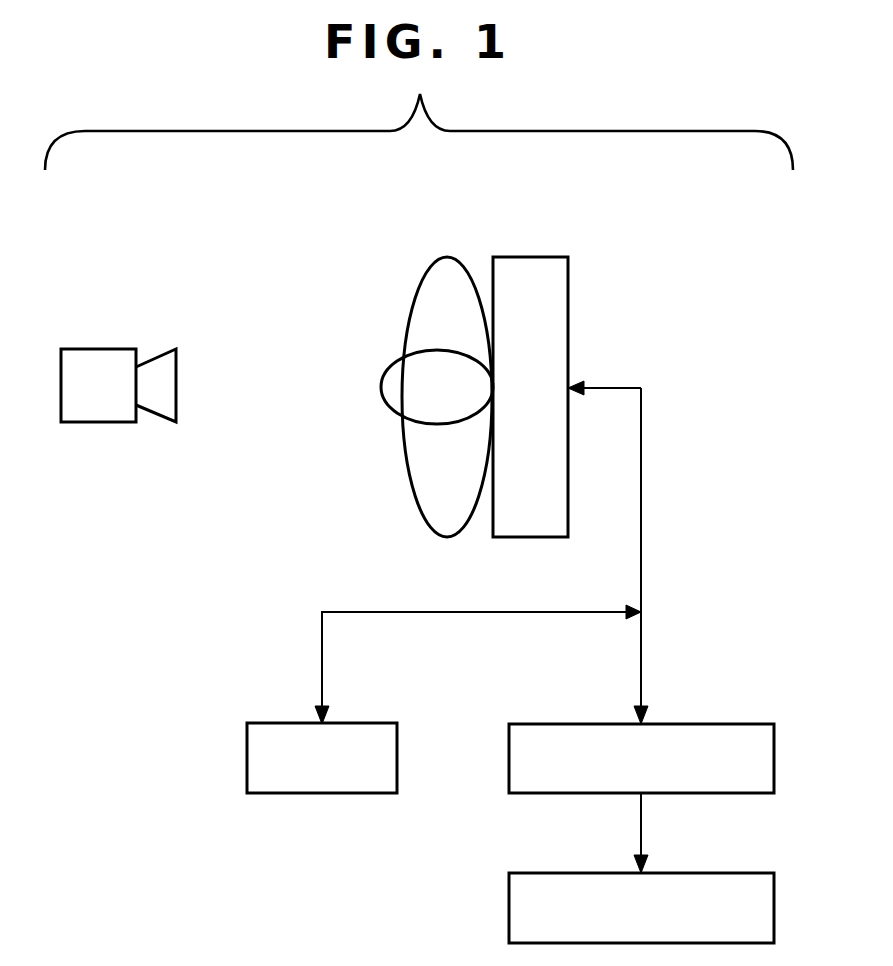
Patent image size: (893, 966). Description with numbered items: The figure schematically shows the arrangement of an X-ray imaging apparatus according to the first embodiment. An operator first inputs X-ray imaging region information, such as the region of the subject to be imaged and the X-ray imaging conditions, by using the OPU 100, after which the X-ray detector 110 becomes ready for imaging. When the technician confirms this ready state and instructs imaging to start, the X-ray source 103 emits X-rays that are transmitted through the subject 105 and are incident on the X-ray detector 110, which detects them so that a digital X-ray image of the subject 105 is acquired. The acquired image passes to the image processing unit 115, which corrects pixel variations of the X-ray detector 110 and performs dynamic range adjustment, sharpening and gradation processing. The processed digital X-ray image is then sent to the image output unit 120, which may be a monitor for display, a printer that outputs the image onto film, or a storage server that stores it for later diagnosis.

The OPU (operation unit) 100 is at (345, 723).
The X-ray source 103 is at (102, 349).
The subject to be imaged 105 is at (447, 257).
The X-ray detector 110 is at (568, 303).
The image processing unit 115 is at (672, 724).
The image output unit 120 is at (672, 873).